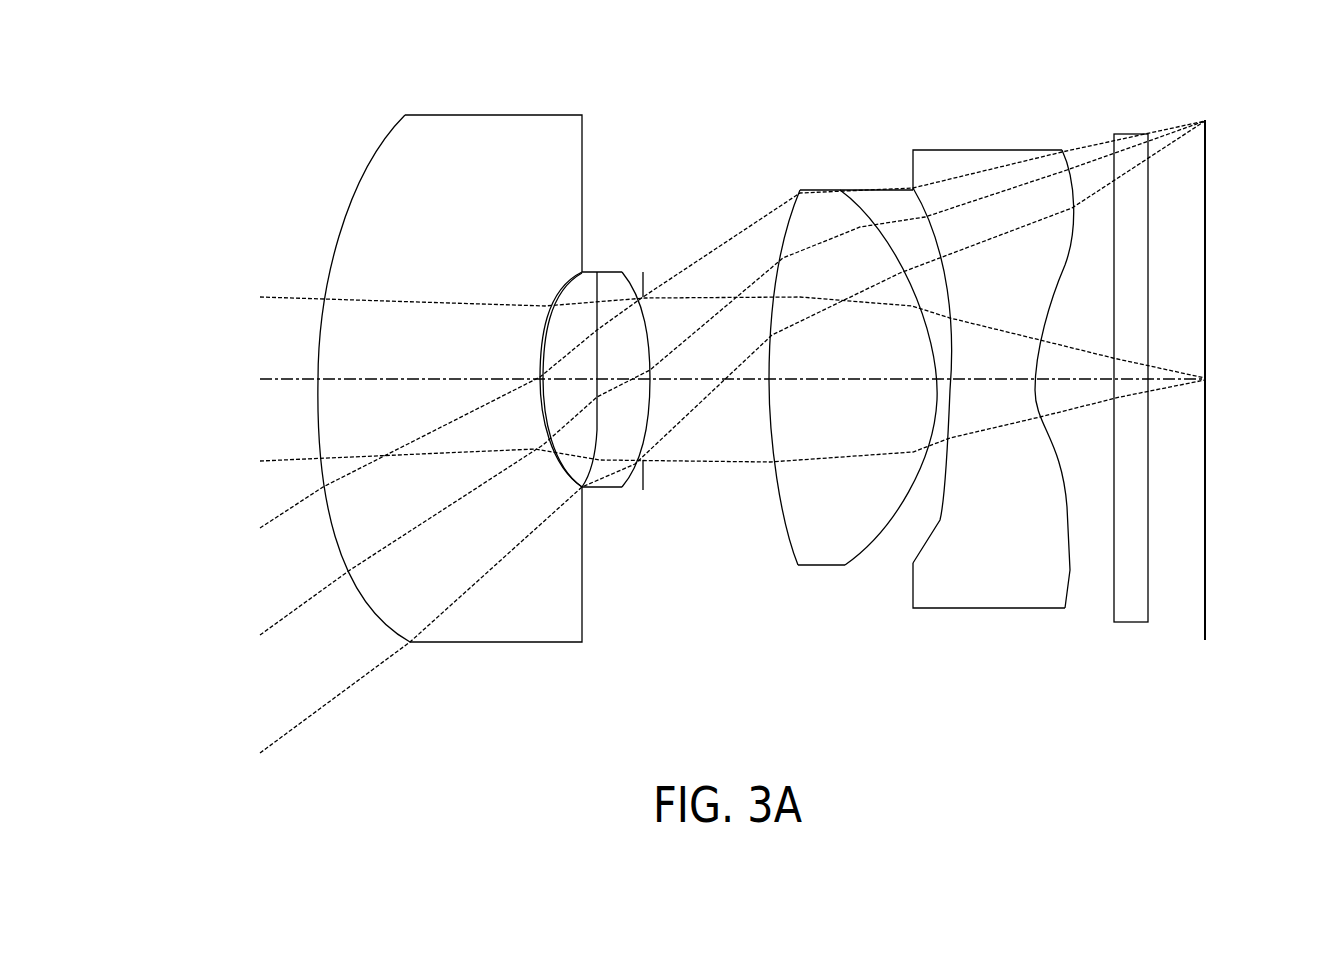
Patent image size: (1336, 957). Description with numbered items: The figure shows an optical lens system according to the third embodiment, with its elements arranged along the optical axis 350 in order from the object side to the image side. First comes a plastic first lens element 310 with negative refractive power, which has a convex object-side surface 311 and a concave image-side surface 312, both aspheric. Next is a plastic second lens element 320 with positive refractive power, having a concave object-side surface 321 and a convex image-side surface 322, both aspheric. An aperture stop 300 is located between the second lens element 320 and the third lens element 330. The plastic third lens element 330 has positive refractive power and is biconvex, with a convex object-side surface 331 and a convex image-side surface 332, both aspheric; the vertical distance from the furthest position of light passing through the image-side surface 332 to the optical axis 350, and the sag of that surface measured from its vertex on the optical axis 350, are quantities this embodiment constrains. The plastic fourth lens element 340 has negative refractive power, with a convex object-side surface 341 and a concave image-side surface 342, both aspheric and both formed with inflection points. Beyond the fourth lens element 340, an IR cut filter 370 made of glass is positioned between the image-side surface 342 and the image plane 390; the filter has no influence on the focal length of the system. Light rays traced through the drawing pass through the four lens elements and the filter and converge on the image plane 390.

The aperture stop 300 is at (645, 274).
The first lens element 310 is at (429, 365).
The object-side surface of the first lens element 311 is at (349, 188).
The image-side surface of the first lens element 312 is at (560, 472).
The second lens element 320 is at (621, 372).
The object-side surface of the second lens element 321 is at (596, 430).
The image-side surface of the second lens element 322 is at (648, 424).
The third lens element 330 is at (837, 366).
The object-side surface of the third lens element 331 is at (781, 509).
The image-side surface of the third lens element 332 is at (874, 522).
The fourth lens element 340 is at (1021, 371).
The object-side surface of the fourth lens element 341 is at (936, 532).
The image-side surface of the fourth lens element 342 is at (1071, 575).
The optical axis 350 is at (287, 379).
The IR cut filter 370 is at (1130, 133).
The image plane 390 is at (1206, 194).